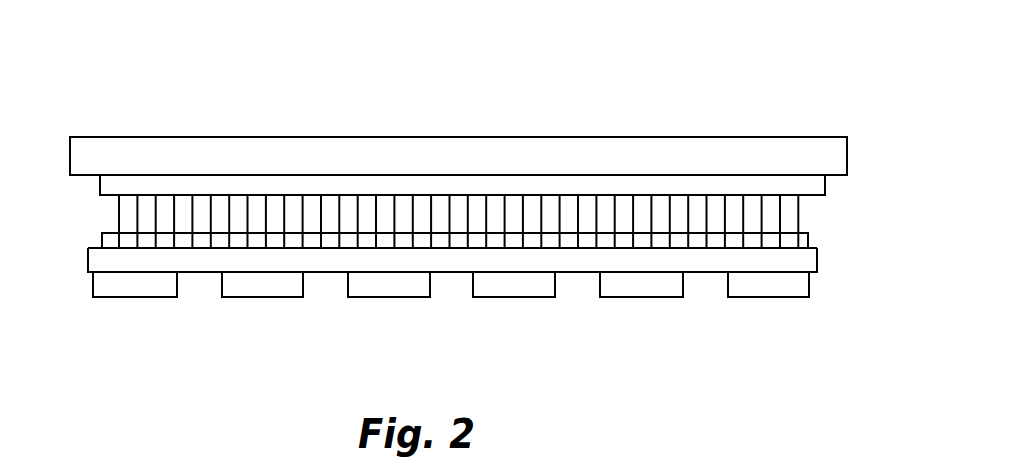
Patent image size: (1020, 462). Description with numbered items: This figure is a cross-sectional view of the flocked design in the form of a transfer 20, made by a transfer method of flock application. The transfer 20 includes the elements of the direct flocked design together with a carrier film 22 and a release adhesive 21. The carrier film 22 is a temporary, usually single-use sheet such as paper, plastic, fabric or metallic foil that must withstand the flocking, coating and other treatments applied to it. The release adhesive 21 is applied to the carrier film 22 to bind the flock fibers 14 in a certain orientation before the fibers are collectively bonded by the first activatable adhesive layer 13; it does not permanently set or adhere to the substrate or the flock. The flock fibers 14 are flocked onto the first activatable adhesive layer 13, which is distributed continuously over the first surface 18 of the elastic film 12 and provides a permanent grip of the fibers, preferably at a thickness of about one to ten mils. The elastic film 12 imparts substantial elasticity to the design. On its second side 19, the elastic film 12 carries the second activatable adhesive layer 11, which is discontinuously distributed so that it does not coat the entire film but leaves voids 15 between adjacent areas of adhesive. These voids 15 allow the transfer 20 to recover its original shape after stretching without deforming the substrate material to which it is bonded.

The transfer 20 is at (43, 181).
The release adhesive 21 is at (827, 186).
The carrier film 22 is at (847, 156).
The flock fibers 14 is at (138, 222).
The first activatable adhesive layer 13 is at (812, 240).
The first surface of the elastic film 18 is at (813, 247).
The elastic film 12 is at (808, 260).
The second side of the elastic film 19 is at (90, 273).
The voids 15 is at (580, 285).
The second activatable adhesive layer 11 is at (770, 283).